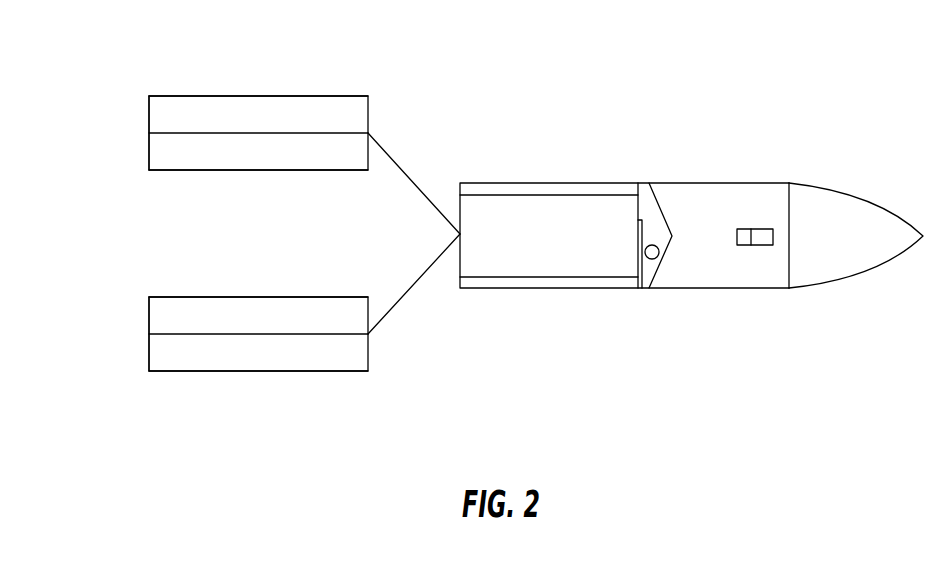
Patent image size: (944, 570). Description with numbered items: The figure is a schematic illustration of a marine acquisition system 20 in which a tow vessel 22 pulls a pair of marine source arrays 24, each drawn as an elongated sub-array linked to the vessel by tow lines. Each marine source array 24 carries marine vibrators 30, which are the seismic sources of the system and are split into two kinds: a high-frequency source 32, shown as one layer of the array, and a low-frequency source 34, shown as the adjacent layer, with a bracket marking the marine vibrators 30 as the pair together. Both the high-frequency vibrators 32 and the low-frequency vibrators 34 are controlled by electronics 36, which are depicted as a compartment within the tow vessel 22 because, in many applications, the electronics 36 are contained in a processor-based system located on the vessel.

The marine acquisition system 20 is at (492, 82).
The tow vessel 22 is at (677, 288).
The marine source array 24 is at (332, 96).
The marine vibrator 30 is at (149, 115).
The high-frequency source 32 is at (243, 95).
The low-frequency source 34 is at (258, 171).
The electronics 36 is at (556, 248).